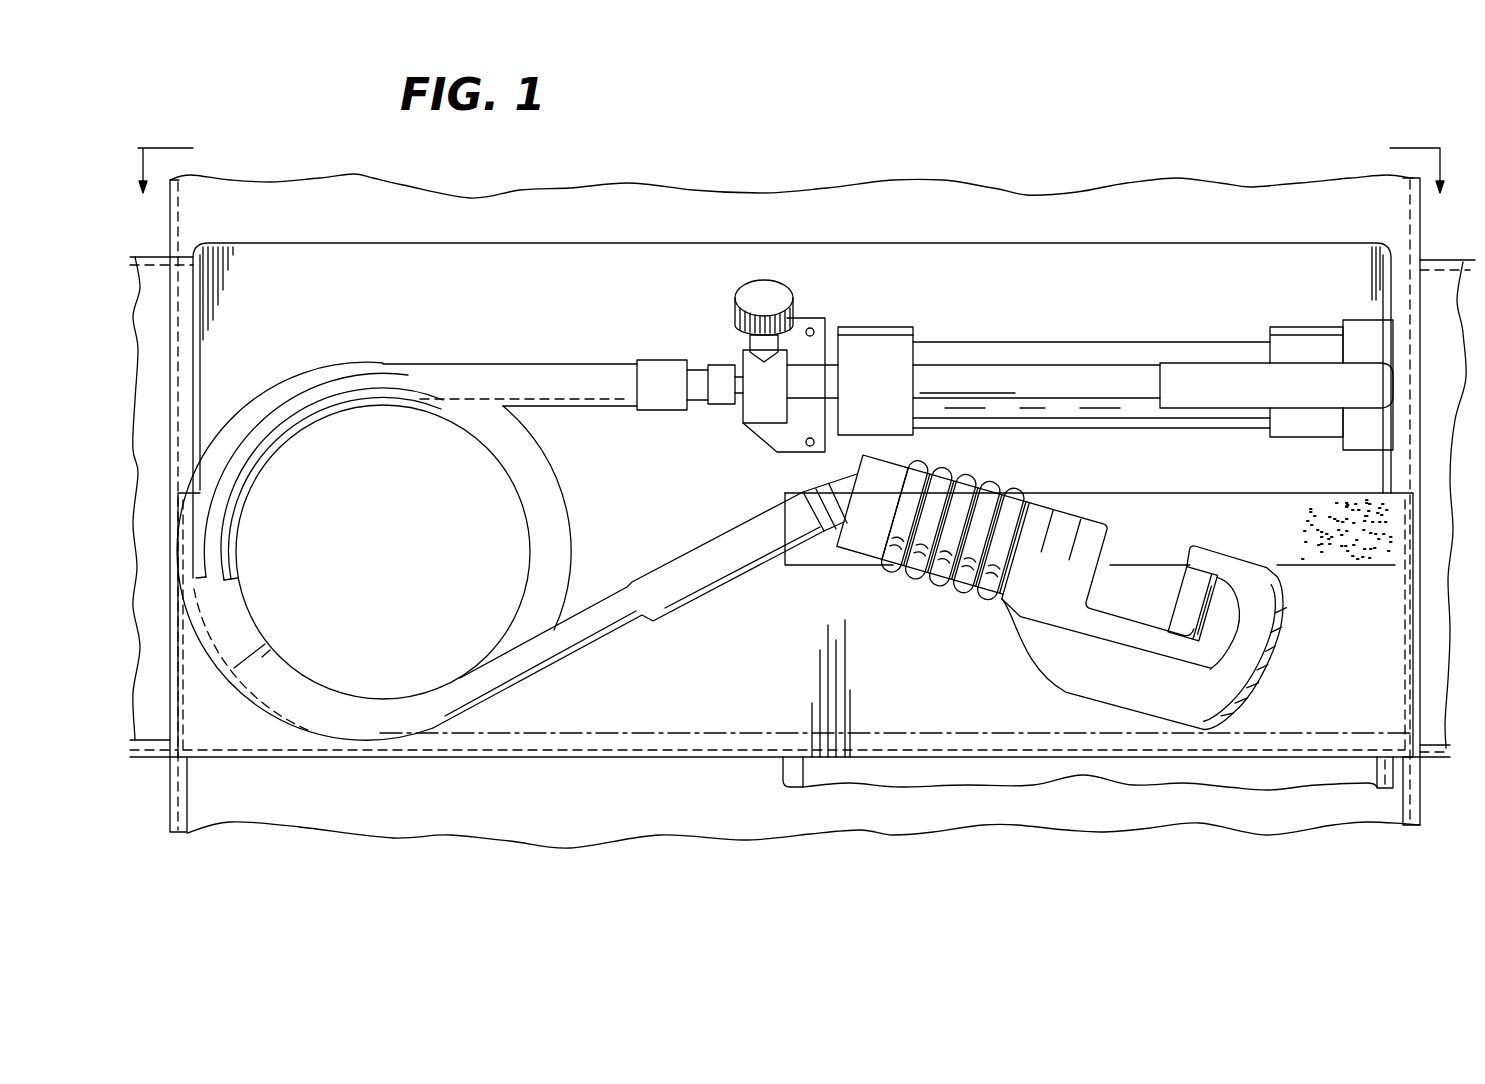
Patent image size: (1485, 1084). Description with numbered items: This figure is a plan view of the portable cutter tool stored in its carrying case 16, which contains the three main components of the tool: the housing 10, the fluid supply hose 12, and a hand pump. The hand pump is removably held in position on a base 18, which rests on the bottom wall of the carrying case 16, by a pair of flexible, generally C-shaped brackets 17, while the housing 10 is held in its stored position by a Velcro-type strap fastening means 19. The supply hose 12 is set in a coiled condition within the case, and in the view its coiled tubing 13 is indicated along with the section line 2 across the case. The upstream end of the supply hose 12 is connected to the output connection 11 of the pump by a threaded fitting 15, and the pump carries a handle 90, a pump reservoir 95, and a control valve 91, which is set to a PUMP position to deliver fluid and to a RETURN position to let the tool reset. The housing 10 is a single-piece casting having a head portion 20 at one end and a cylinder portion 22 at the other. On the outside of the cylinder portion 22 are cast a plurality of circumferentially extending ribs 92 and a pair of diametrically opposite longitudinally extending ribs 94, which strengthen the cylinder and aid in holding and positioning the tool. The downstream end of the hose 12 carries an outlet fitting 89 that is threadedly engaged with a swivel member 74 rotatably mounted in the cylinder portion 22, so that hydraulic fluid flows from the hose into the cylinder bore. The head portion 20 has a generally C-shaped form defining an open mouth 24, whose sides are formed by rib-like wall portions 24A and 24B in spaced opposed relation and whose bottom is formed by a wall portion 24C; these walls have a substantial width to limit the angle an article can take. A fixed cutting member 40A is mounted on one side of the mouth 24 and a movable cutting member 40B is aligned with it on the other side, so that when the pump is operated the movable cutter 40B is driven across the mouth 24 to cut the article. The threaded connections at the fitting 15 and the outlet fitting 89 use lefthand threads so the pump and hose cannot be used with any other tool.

The section line 2- 2 is at (793, 151).
The housing 10 is at (1042, 554).
The output connection 11 is at (722, 398).
The fluid supply hose 12 is at (580, 494).
The tubing 13 is at (538, 362).
The threaded fitting 15 is at (692, 360).
The carrying case 16 is at (893, 180).
The brackets 17 is at (890, 327).
The base 18 is at (599, 290).
The strap fastening means 19 is at (1275, 495).
The head portion 20 is at (1110, 673).
The cylinder portion 22 is at (935, 583).
The mouth 24 is at (1176, 554).
The wall portion 24A is at (1192, 551).
The wall portion 24B is at (1130, 515).
The wall portion 24C is at (1140, 615).
The first cutting member 40A is at (1235, 633).
The second cutting member 40B is at (1053, 510).
The swivel member 74 is at (840, 482).
The outlet fitting 89 is at (818, 530).
The handle 90 is at (1190, 363).
The control valve 91 is at (745, 348).
The circumferentially extending ribs 92 is at (960, 480).
The longitudinally extending ribs 94 is at (975, 488).
The pump reservoir 95 is at (1102, 342).